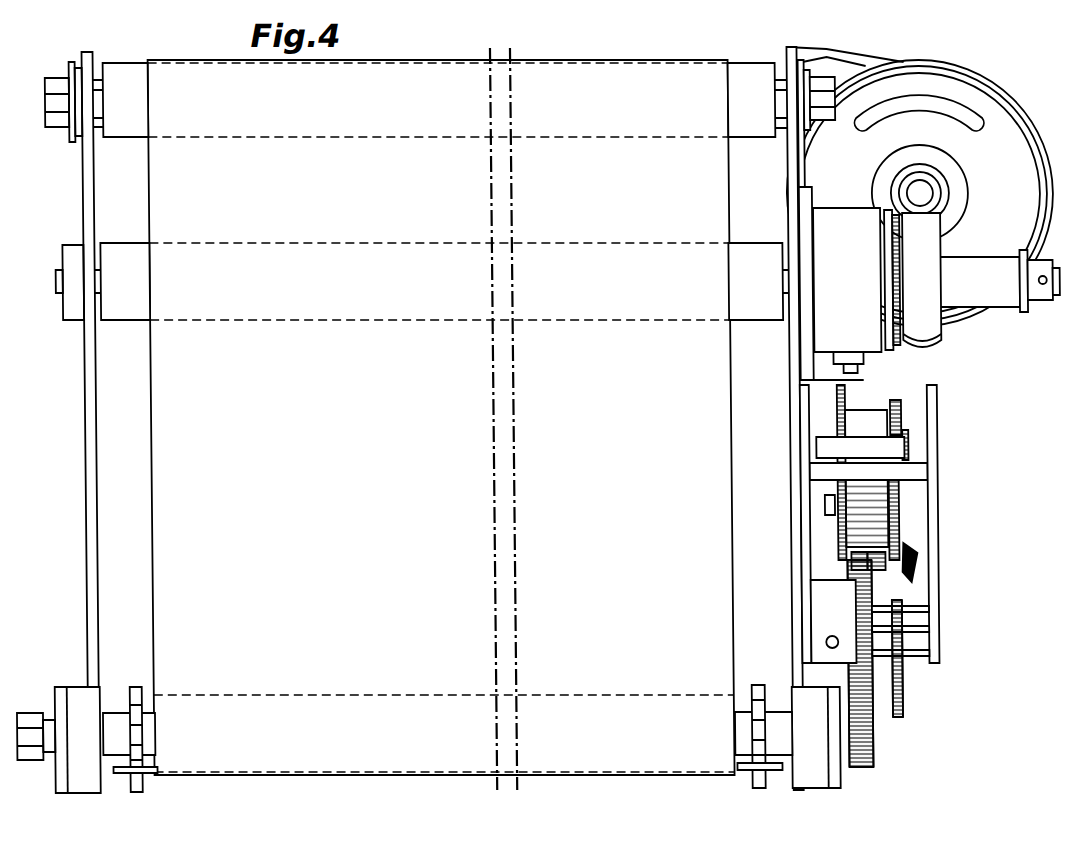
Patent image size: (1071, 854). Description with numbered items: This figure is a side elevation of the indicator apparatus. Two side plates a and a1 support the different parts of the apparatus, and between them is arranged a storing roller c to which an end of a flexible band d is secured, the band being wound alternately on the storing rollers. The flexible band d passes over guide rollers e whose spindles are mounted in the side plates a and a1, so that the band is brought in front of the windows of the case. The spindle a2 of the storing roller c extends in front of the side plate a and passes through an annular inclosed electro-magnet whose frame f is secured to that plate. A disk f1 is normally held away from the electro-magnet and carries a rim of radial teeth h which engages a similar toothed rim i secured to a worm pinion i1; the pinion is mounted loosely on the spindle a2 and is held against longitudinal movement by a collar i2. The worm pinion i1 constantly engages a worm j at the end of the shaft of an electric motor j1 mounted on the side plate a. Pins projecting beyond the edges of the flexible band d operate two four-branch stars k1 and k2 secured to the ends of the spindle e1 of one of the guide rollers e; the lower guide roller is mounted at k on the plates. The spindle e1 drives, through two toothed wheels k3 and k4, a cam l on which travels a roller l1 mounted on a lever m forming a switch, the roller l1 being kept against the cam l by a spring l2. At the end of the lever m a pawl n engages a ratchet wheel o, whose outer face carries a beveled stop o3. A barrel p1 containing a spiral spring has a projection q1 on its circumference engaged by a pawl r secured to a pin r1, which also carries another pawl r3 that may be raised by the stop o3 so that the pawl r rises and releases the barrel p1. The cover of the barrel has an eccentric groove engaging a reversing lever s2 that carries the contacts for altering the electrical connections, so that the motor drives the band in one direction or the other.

The flexible band d is at (440, 419).
The side plate a is at (790, 167).
The side plate a1 is at (89, 187).
The spindle a2 is at (1040, 302).
The storing roller c is at (422, 281).
The guide roller e is at (740, 690).
The spindle e1 is at (451, 733).
The frame f is at (847, 280).
The disk f1 is at (860, 364).
The toothed rim h is at (920, 345).
The toothed rim i is at (967, 384).
The worm pinion i1 is at (921, 280).
The collar i2 is at (1020, 312).
The worm j is at (940, 182).
The electric motor j1 is at (920, 193).
The cross bar k is at (142, 775).
The four-branch star k1 is at (752, 688).
The four-branch star k2 is at (129, 687).
The toothed wheel k3 is at (868, 748).
The toothed wheel k4 is at (893, 668).
The cam l is at (900, 690).
The roller l1 is at (908, 570).
The spring l2 is at (868, 568).
The lever m is at (907, 550).
The pawl n is at (897, 517).
The ratchet wheel o is at (900, 422).
The stop o3 is at (907, 488).
The barrel p1 is at (898, 412).
The projection q1 is at (868, 550).
The pawl r is at (887, 348).
The pin r1 is at (833, 505).
The pawl r3 is at (907, 448).
The reversing lever s2 is at (830, 402).